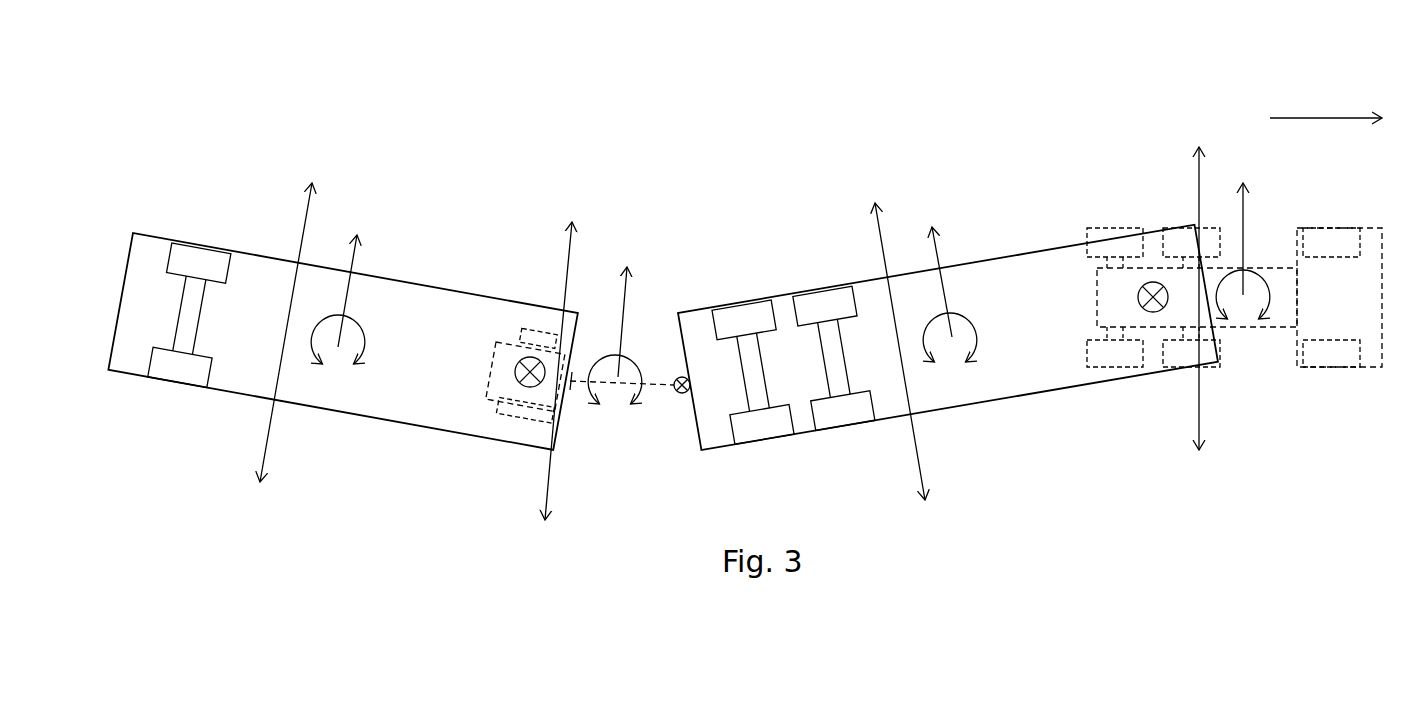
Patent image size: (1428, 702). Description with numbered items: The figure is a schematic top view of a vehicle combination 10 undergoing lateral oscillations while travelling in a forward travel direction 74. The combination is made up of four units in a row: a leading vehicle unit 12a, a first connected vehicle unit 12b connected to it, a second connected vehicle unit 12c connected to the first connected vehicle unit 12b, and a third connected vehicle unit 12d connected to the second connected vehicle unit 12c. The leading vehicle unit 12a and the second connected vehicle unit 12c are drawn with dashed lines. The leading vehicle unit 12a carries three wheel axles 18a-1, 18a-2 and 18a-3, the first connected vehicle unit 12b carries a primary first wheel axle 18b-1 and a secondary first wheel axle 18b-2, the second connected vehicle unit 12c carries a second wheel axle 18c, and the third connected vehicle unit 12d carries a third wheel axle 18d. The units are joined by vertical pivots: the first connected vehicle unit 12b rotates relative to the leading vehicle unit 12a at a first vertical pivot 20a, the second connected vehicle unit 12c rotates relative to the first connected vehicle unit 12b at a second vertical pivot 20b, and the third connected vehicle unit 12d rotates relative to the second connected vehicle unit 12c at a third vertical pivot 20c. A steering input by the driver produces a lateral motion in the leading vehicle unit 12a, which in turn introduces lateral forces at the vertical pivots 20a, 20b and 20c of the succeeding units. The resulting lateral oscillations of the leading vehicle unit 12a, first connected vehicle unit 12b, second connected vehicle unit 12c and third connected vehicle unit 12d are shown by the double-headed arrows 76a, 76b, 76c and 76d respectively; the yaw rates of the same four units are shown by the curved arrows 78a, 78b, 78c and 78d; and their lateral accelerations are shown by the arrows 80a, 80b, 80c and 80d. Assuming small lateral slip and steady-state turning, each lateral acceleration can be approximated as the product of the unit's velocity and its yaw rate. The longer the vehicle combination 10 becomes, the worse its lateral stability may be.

The vehicle combination 10 is at (368, 92).
The forward travel direction 74 is at (1326, 98).
The leading vehicle unit 12a is at (1362, 311).
The first connected vehicle unit 12b is at (1062, 331).
The second connected vehicle unit 12c is at (507, 333).
The third connected vehicle unit 12d is at (455, 370).
The wheel axle 18a-1 is at (1342, 240).
The wheel axle 18a-2 is at (1173, 240).
The wheel axle 18a-3 is at (1114, 237).
The primary first wheel axle 18b-1 is at (822, 306).
The secondary first wheel axle 18b-2 is at (742, 322).
The second wheel axle 18c is at (516, 427).
The third wheel axle 18d is at (198, 258).
The first vertical pivot 20a is at (1153, 312).
The second vertical pivot 20b is at (681, 394).
The third vertical pivot 20c is at (525, 384).
The lateral oscillation 76a is at (1204, 417).
The lateral oscillation 76b is at (929, 480).
The lateral oscillation 76c is at (551, 491).
The lateral oscillation 76d is at (267, 458).
The yaw rate 78a is at (1229, 284).
The yaw rate 78b is at (976, 324).
The yaw rate 78c is at (633, 366).
The yaw rate 78d is at (366, 328).
The lateral acceleration 80a is at (1248, 213).
The lateral acceleration 80b is at (941, 251).
The lateral acceleration 80c is at (628, 301).
The lateral acceleration 80d is at (359, 258).